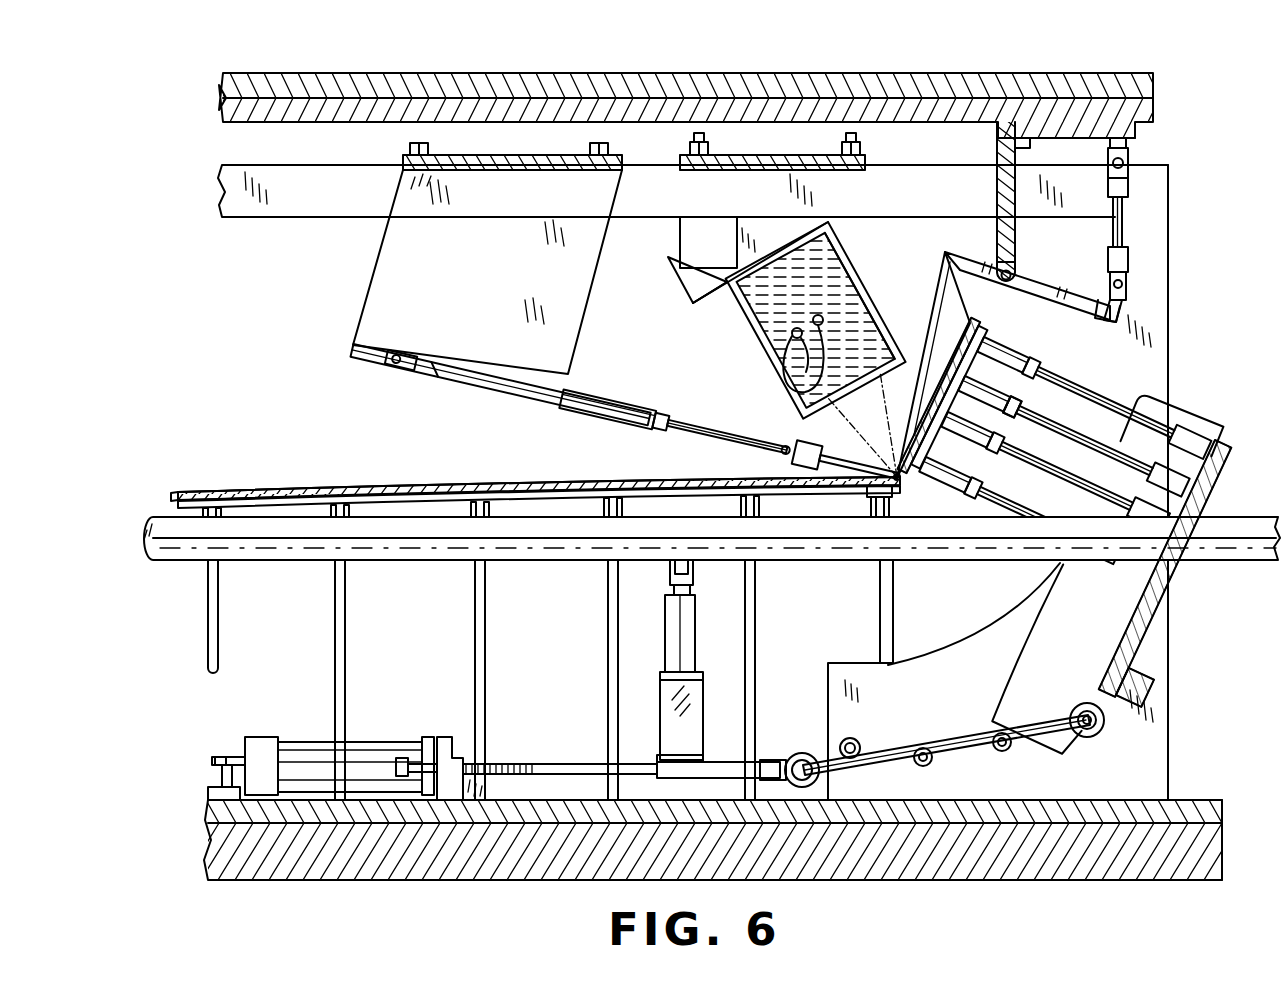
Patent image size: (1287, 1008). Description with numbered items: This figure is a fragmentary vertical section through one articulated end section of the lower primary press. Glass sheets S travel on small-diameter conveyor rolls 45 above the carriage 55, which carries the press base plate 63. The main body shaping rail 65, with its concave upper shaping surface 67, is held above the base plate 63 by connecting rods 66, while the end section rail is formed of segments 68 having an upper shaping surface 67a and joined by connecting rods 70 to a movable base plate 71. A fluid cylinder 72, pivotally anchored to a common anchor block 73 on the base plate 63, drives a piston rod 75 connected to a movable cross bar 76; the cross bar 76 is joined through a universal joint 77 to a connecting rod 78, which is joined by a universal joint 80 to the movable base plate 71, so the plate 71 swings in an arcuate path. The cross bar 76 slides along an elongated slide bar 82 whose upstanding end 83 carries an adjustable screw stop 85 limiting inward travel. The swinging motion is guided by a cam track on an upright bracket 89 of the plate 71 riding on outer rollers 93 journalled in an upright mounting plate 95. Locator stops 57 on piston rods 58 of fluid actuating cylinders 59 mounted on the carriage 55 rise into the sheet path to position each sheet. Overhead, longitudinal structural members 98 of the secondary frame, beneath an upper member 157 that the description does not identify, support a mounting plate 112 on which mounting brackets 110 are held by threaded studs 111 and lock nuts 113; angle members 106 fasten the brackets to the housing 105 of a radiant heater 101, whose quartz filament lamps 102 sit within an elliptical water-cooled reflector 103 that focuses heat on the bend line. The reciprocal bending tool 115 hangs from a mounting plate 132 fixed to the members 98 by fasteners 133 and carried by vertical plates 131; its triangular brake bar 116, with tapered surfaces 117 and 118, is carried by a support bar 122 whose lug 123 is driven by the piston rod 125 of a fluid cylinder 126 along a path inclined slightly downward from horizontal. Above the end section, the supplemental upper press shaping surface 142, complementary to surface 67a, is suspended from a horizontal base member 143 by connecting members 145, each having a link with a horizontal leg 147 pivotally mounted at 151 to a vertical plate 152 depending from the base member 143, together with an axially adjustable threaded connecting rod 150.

The upper support beam 157 is at (230, 105).
The horizontal base member 143 is at (1140, 132).
The longitudinal structural members 98 is at (238, 183).
The vertical plate 152 is at (996, 152).
The pivotal mounting 151 is at (1010, 270).
The connecting rod 150 is at (1123, 224).
The horizontal leg 147 is at (1118, 317).
The mounting plate 132 is at (477, 172).
The fasteners 133 is at (410, 148).
The mounting plate 112 is at (760, 153).
The lock nuts 113 is at (692, 153).
The threaded studs 111 is at (697, 132).
The mounting brackets 110 is at (731, 250).
The vertically extending plates 131 is at (388, 262).
The fluid cylinder 126 is at (466, 364).
The piston rod 125 is at (693, 426).
The lug 123 is at (806, 459).
The brake bar 116 is at (842, 466).
The reflector 103 is at (788, 276).
The housing 105 is at (822, 243).
The angle members 106 is at (690, 300).
The quartz filament lamps 102 is at (815, 355).
The heater 101 is at (712, 336).
The bending tool 115 is at (766, 424).
The tapered surface 117 is at (884, 470).
The connecting members 145 is at (916, 272).
The shaping surface 67a is at (948, 348).
The segments 68 is at (985, 330).
The connecting rods 70 is at (1058, 402).
The shaping surfaces 142 is at (1012, 398).
The upright bracket 89 is at (1190, 412).
The mounting plate 95 is at (1168, 692).
The connecting rods 66 is at (477, 582).
The shaping surface 67 is at (430, 488).
The glass sheets S is at (283, 488).
The shaping rail 65 is at (170, 486).
The support bar 122 is at (778, 492).
The tapered surface 118 is at (862, 494).
The conveyor rolls 45 is at (168, 553).
The movable base plate 71 is at (1200, 512).
The universal joint 80 is at (1104, 722).
The connecting rod 78 is at (955, 748).
The universal joint 77 is at (802, 752).
The slide bar 82 is at (768, 774).
The outer rollers 93 is at (858, 740).
The locator stops 57 is at (668, 572).
The piston rod 58 is at (675, 589).
The fluid actuating cylinder 59 is at (694, 660).
The cross bar 76 is at (712, 766).
The piston rod 75 is at (578, 762).
The adjustable screw stop 85 is at (482, 762).
The fluid cylinders 72 is at (298, 752).
The anchor block 73 is at (213, 792).
The upstanding end 83 is at (444, 740).
The carriage 55 is at (218, 852).
The base plate 63 is at (1200, 810).